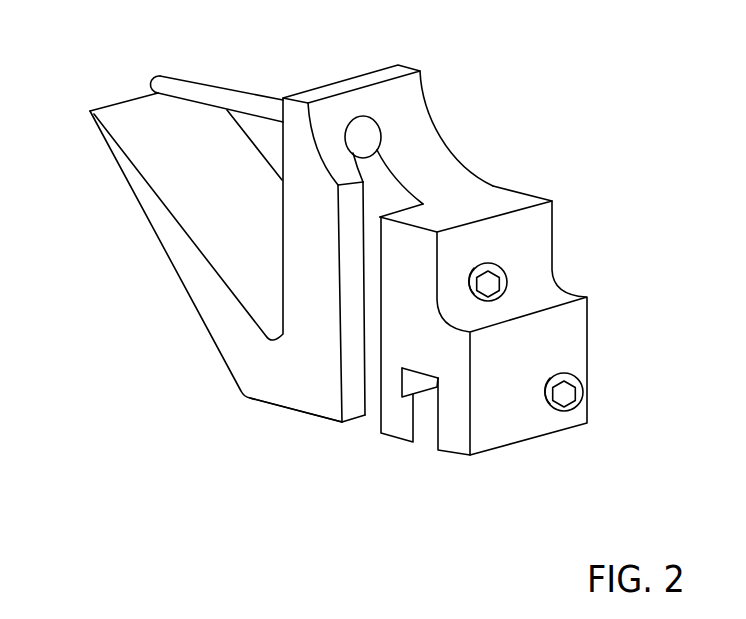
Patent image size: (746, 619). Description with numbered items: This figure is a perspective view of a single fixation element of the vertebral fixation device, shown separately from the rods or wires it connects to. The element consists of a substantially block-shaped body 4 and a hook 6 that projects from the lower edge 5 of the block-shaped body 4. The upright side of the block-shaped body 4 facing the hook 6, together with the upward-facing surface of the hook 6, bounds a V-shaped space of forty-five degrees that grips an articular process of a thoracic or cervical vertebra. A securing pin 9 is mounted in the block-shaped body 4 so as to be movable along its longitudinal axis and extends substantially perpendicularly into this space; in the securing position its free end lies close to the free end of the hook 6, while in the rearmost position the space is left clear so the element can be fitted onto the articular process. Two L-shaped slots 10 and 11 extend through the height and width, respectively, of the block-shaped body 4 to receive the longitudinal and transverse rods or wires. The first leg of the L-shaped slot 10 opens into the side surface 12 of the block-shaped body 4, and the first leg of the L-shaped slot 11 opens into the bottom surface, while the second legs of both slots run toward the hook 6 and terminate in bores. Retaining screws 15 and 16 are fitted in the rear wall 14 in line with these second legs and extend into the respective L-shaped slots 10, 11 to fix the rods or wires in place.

The block-shaped body 4 is at (477, 190).
The lower edge 5 is at (247, 398).
The hook 6 is at (175, 237).
The securing pin 9 is at (232, 95).
The L-shaped slot 10 is at (385, 185).
The L-shaped slot 11 is at (432, 417).
The side surface 12 is at (303, 276).
The rear wall 14 is at (519, 372).
The retaining screw 15 is at (488, 284).
The retaining screw 16 is at (564, 394).